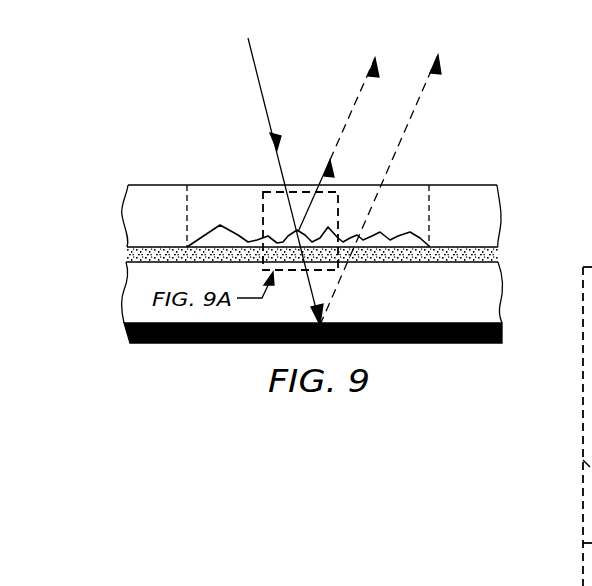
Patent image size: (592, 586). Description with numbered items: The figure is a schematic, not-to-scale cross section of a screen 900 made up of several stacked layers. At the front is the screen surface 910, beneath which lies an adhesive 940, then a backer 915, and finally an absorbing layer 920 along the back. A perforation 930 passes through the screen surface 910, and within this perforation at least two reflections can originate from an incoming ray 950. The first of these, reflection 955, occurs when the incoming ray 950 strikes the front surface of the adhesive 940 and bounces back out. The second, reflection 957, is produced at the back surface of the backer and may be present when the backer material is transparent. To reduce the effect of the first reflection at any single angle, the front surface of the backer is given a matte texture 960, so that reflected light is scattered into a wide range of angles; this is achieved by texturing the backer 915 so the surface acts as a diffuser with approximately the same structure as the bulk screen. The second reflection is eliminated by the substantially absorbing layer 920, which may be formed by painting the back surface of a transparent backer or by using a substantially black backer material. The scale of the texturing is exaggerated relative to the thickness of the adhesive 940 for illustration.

The screen 900 is at (530, 133).
The screen surface 910 is at (127, 206).
The backer 915 is at (122, 297).
The absorbing layer 920 is at (170, 346).
The perforation 930 is at (190, 207).
The adhesive 940 is at (126, 254).
The incoming ray (a) 950 is at (253, 70).
The reflection (b) 955 is at (357, 100).
The reflection (c) 957 is at (418, 107).
The matte texture 960 is at (410, 198).